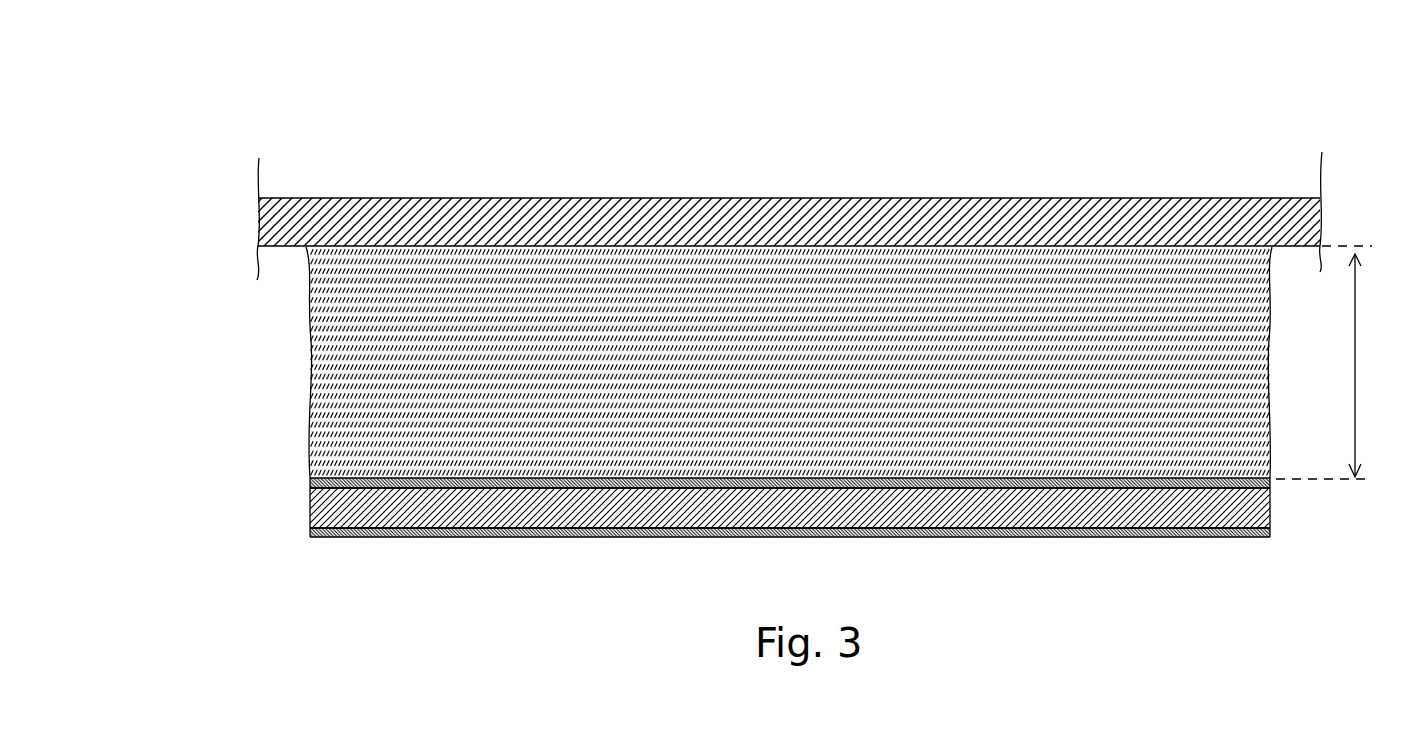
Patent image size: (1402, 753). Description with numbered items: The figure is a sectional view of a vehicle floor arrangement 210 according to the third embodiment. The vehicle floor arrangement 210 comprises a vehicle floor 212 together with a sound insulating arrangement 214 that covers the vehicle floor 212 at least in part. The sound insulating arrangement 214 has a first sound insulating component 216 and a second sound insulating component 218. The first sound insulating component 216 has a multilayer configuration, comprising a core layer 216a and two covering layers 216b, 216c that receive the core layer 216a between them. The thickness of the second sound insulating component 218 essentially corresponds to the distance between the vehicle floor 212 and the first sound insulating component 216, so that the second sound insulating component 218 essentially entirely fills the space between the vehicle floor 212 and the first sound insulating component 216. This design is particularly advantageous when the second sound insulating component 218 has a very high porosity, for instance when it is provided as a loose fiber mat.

The vehicle floor arrangement 210 is at (254, 86).
The vehicle floor 212 is at (380, 199).
The sound insulating arrangement 214 is at (231, 305).
The first sound insulating component 216 is at (370, 552).
The core layer 216a is at (318, 505).
The covering layer 216b is at (312, 538).
The covering layer 216c is at (312, 484).
The second sound insulating component 218 is at (335, 396).